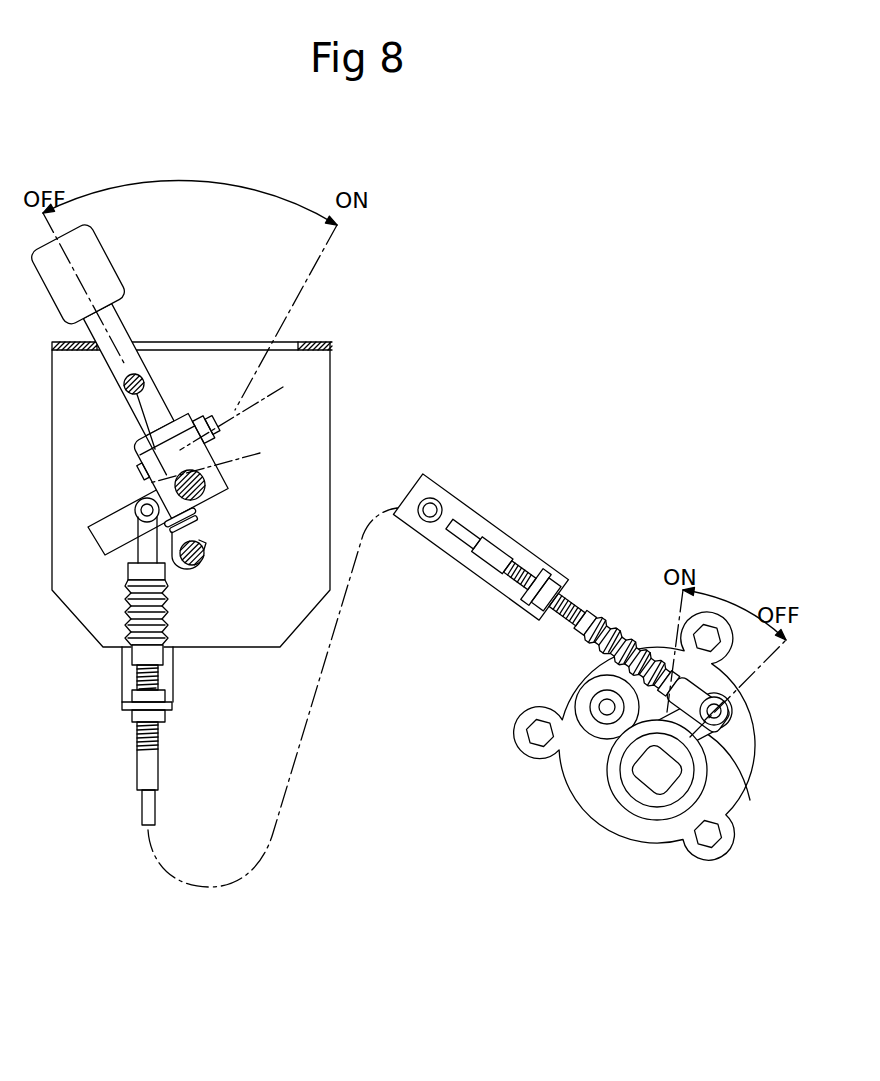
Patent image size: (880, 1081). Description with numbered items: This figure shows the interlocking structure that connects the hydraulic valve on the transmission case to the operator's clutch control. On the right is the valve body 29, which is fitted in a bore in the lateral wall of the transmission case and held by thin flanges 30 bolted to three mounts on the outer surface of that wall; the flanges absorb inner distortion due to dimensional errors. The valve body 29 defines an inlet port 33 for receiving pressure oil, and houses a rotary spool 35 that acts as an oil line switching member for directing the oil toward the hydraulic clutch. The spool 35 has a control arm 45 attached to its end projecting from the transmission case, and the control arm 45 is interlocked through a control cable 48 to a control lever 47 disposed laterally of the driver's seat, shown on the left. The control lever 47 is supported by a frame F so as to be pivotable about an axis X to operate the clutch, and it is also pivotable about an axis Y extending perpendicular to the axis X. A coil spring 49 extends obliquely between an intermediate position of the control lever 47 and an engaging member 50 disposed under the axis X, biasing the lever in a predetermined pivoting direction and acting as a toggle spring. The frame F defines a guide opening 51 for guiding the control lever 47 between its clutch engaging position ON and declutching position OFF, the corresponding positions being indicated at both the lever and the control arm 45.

The valve body 29 is at (590, 760).
The thin flanges 30 is at (521, 728).
The inlet port 33 is at (607, 707).
The rotary spool 35 is at (643, 772).
The control arm 45 is at (703, 743).
The control lever 47 is at (85, 250).
The control cable 48 is at (140, 807).
The coil spring 49 is at (200, 517).
The engaging member 50 is at (200, 560).
The guide opening 51 is at (221, 341).
The frame F is at (325, 393).
The axis X is at (215, 461).
The axis Y is at (240, 411).